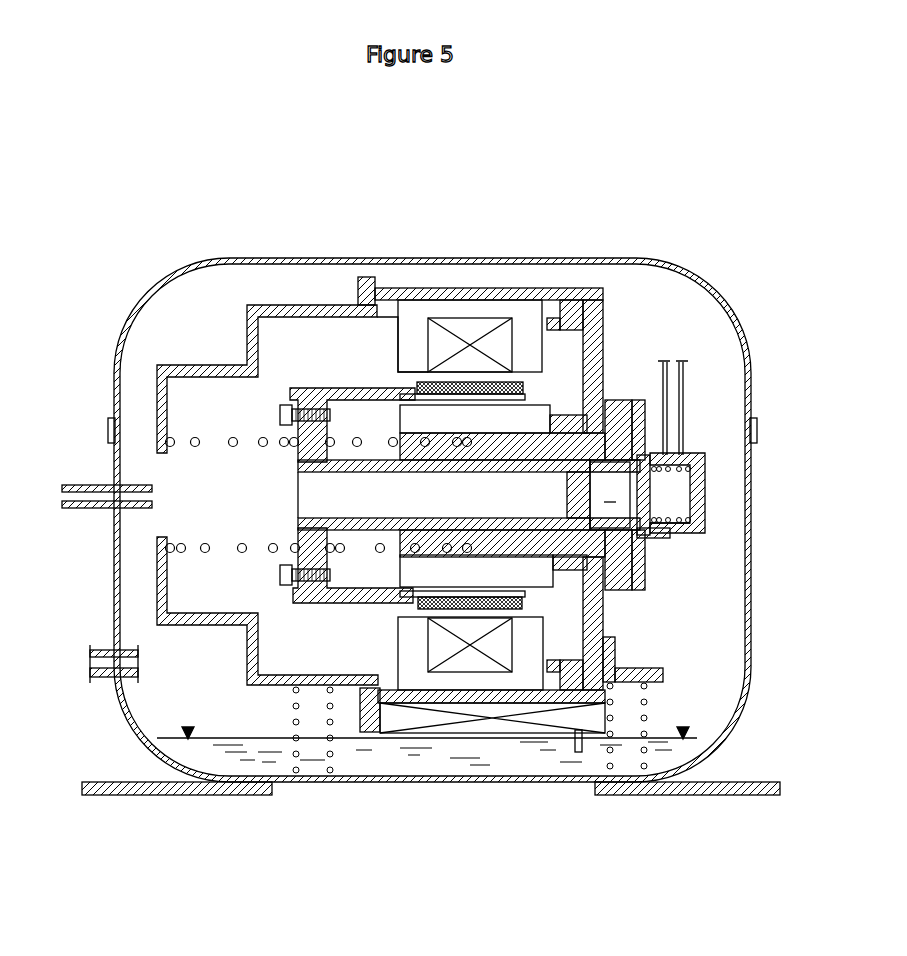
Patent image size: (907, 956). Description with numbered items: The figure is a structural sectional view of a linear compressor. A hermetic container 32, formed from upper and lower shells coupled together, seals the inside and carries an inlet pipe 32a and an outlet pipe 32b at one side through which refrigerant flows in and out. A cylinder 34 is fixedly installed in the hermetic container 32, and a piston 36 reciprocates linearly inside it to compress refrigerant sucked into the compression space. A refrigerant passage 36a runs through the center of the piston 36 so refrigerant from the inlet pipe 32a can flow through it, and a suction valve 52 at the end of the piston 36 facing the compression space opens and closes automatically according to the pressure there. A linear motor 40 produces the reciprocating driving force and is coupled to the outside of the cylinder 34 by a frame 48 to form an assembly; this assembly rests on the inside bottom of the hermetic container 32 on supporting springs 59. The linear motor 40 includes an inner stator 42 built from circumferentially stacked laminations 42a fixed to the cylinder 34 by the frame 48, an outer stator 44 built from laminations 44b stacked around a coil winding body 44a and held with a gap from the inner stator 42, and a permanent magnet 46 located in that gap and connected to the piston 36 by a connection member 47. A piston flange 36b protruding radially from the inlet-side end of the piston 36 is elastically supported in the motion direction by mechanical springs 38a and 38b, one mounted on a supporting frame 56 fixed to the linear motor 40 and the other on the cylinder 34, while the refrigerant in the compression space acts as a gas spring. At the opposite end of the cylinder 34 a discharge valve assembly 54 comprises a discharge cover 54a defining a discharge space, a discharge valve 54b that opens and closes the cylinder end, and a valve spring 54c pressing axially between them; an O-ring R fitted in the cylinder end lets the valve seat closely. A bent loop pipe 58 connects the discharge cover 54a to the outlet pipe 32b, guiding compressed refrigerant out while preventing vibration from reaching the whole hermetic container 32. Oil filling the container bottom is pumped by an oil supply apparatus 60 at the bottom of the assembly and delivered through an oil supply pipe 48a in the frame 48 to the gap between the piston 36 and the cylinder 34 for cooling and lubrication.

The hermetic container 32 is at (196, 263).
The inlet pipe 32a is at (87, 486).
The outlet pipe 32b is at (101, 650).
The cylinder 34 is at (617, 410).
The piston 36 is at (340, 462).
The refrigerant passage 36a is at (373, 488).
The piston flange 36b is at (316, 399).
The mechanical spring 38a is at (205, 553).
The mechanical spring 38b is at (378, 553).
The linear motor 40 is at (485, 458).
The inner stator 42 is at (413, 399).
The laminations 42a is at (416, 573).
The outer stator 44 is at (470, 316).
The coil winding body 44a is at (468, 663).
The laminations 44b is at (512, 685).
The permanent magnet 46 is at (512, 383).
The connection member 47 is at (300, 406).
The frame 48 is at (617, 653).
The oil supply pipe 48a is at (594, 618).
The suction valve 52 is at (590, 440).
The discharge valve assembly 54 is at (752, 532).
The discharge cover 54a is at (704, 520).
The discharge valve 54b is at (690, 537).
The valve spring 54c is at (666, 534).
The supporting frame 56 is at (160, 551).
The loop pipe 58 is at (684, 378).
The supporting springs 59 is at (291, 756).
The oil supply apparatus 60 is at (553, 736).
The O-ring R is at (706, 458).